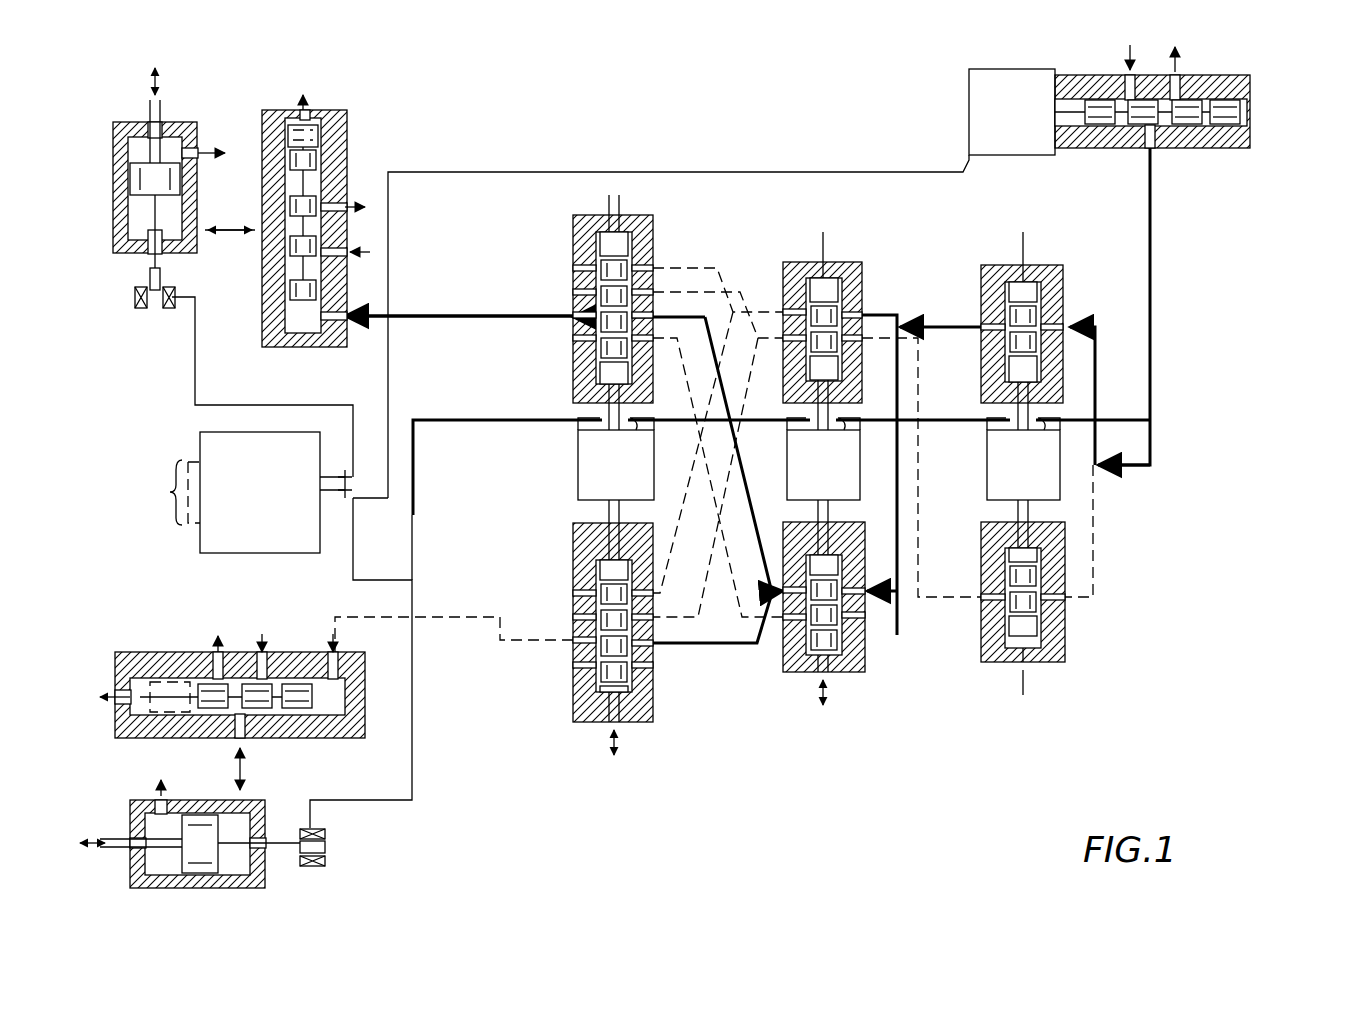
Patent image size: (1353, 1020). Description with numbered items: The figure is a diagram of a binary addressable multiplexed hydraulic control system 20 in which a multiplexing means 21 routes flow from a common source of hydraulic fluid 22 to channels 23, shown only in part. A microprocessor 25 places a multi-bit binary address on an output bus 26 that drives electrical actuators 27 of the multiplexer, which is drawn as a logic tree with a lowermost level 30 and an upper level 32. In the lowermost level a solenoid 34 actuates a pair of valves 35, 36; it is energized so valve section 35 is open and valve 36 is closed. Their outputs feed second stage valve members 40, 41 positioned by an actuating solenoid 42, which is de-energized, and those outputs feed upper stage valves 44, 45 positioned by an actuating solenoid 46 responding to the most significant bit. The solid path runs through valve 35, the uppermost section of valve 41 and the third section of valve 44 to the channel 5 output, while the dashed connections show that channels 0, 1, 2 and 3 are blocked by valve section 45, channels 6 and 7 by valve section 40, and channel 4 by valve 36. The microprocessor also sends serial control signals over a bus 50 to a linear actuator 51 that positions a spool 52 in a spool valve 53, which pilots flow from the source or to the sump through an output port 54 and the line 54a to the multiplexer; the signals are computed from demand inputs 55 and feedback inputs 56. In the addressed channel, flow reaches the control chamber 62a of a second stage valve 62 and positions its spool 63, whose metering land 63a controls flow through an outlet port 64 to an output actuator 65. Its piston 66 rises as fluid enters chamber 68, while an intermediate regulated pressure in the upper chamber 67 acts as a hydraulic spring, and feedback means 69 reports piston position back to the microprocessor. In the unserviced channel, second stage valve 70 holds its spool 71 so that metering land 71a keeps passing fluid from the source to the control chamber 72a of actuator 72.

The multiplexed hydraulic control system 20 is at (792, 122).
The multiplexing means 21 is at (838, 449).
The common source of hydraulic fluid 22 is at (1199, 105).
The channels 23 is at (145, 545).
The microprocessor 25 is at (200, 440).
The output bus 26 is at (503, 420).
The electrical actuators 27 is at (522, 500).
The lowermost level 30 is at (1031, 458).
The upper level 32 is at (670, 304).
The solenoid 34 is at (987, 464).
The valve section 35 is at (1063, 290).
The valve 36 is at (1065, 640).
The second stage valve member 40 is at (862, 272).
The second stage valve member 41 is at (865, 661).
The actuating solenoid 42 is at (787, 464).
The upper stage valve 44 is at (653, 225).
The upper stage valve 45 is at (653, 712).
The actuating solenoid 46 is at (578, 466).
The bus 50 is at (560, 172).
The linear actuator 51 is at (1005, 69).
The spool 52 is at (1245, 118).
The spool valve 53 is at (1250, 82).
The output port 54 is at (1152, 150).
The pressure line 54a is at (1150, 412).
The demand inputs 55 is at (139, 495).
The feedback inputs 56 is at (338, 477).
The second stage valve 62 is at (293, 231).
The control chamber 62a is at (300, 345).
The spool 63 is at (320, 150).
The metering land 63a is at (286, 215).
The outlet port 64 is at (270, 235).
The output actuator 65 is at (166, 177).
The piston 66 is at (130, 168).
The upper chamber 67 is at (175, 150).
The chamber 68 is at (128, 232).
The feedback means 69 is at (168, 312).
The second stage valve 70 is at (355, 738).
The spool 71 is at (302, 735).
The metering land 71a is at (247, 636).
The actuator 72 is at (255, 800).
The control chamber 72a is at (250, 858).
The channel 7 output 7 is at (573, 268).
The channel 6 is at (573, 292).
The channel 5 output 5 is at (573, 316).
The channel 4 is at (573, 338).
The channel 3 is at (573, 593).
The channel 2 is at (573, 617).
The channel 1 is at (511, 653).
The channel 0 is at (573, 665).